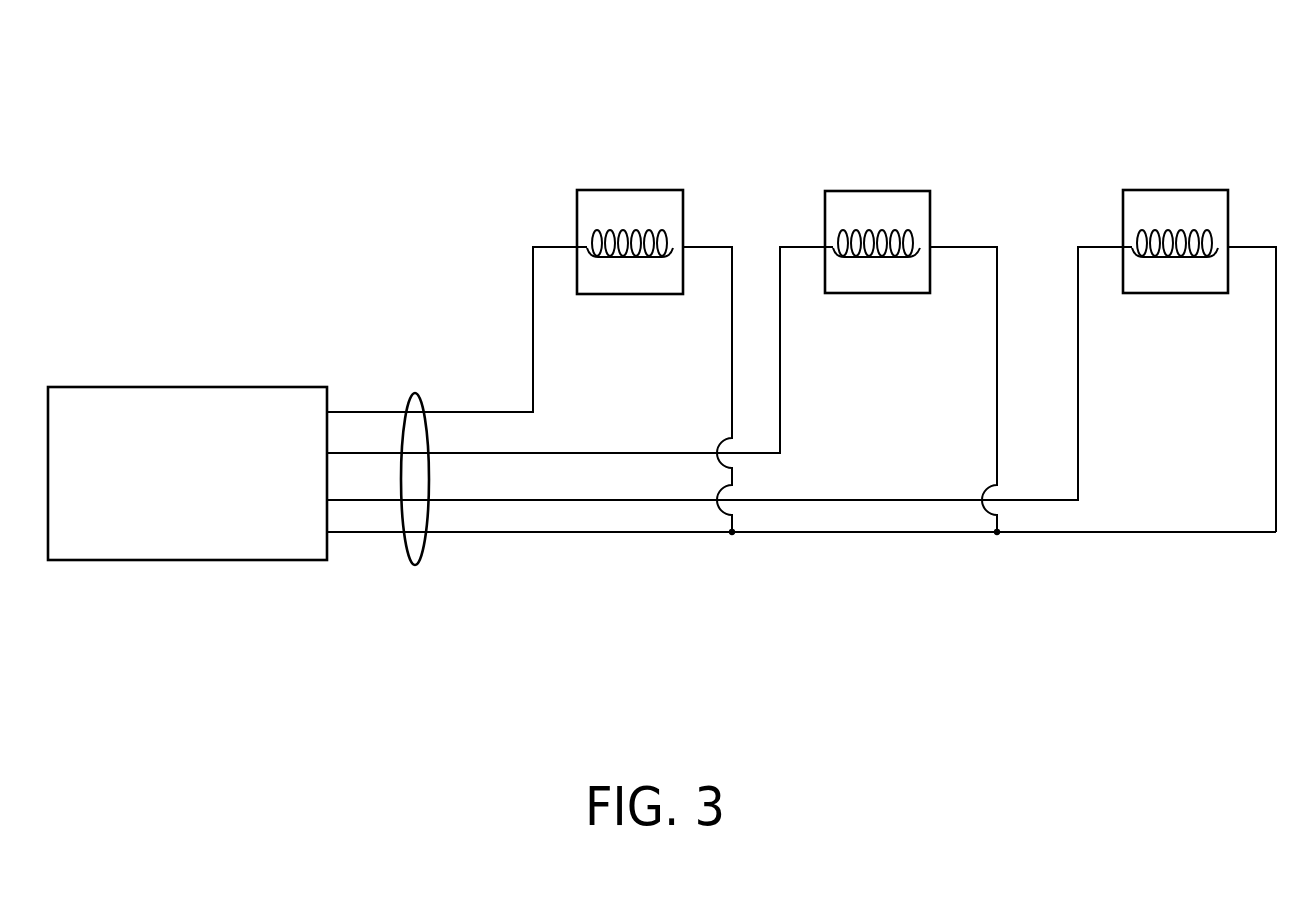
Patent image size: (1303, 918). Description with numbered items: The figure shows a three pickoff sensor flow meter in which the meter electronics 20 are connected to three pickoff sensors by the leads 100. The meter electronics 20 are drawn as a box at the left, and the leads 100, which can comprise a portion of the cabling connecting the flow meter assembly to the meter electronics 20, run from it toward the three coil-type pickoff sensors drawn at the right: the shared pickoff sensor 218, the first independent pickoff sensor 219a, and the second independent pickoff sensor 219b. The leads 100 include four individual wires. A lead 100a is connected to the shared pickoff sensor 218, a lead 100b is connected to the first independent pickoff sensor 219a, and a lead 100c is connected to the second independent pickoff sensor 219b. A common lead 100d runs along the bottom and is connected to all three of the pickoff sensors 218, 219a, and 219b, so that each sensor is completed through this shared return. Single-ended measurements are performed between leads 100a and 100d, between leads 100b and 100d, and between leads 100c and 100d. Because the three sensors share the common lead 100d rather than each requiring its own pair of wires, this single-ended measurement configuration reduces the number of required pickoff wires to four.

The meter electronics 20 is at (175, 532).
The leads 100 is at (415, 565).
The lead 100a is at (533, 302).
The lead 100b is at (780, 300).
The lead 100c is at (1078, 298).
The common lead 100d is at (1175, 535).
The shared pickoff sensor 218 is at (628, 190).
The first independent pickoff sensor 219a is at (880, 191).
The second independent pickoff sensor 219b is at (1183, 190).